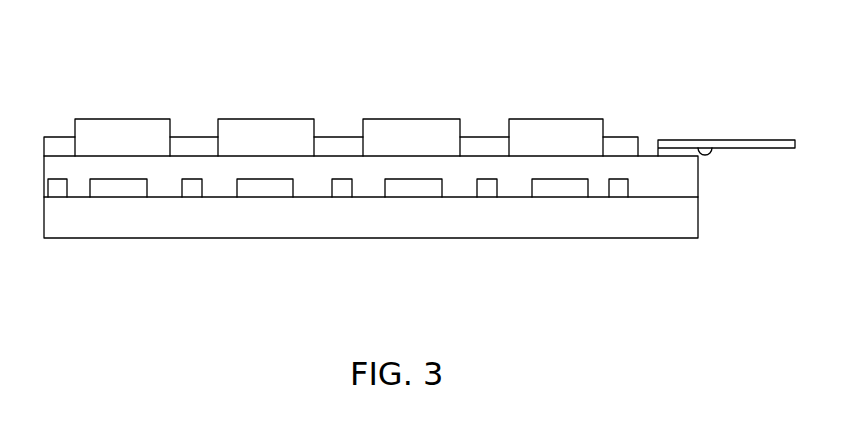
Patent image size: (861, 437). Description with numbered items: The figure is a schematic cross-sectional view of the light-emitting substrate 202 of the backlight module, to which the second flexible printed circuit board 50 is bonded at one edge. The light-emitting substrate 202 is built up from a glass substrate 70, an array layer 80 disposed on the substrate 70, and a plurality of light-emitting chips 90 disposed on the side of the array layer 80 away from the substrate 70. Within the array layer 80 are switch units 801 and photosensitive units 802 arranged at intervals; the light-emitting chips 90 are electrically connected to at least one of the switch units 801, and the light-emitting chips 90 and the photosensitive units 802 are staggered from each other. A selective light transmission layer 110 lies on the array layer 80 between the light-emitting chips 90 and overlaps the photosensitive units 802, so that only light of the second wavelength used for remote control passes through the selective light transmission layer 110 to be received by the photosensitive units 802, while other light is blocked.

The light-emitting substrate 202 is at (78, 99).
The second flexible printed circuit board 50 is at (746, 140).
The substrate 70 is at (668, 227).
The array layer 80 is at (668, 184).
The switch unit 801 is at (270, 188).
The photosensitive unit 802 is at (62, 188).
The light-emitting chip 90 is at (553, 139).
The selective light transmission layer 110 is at (333, 146).